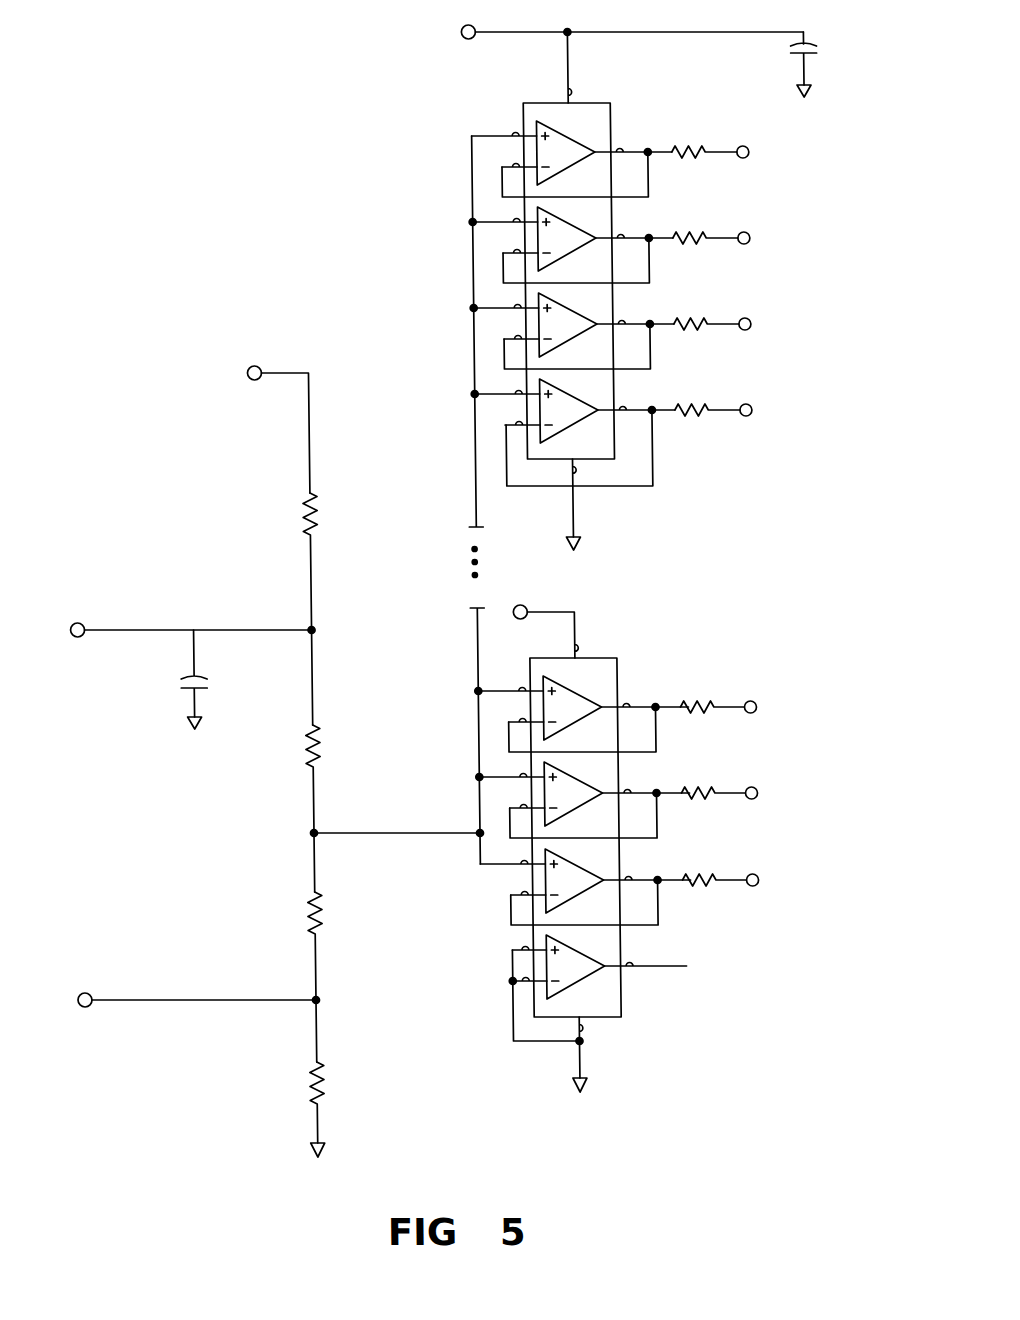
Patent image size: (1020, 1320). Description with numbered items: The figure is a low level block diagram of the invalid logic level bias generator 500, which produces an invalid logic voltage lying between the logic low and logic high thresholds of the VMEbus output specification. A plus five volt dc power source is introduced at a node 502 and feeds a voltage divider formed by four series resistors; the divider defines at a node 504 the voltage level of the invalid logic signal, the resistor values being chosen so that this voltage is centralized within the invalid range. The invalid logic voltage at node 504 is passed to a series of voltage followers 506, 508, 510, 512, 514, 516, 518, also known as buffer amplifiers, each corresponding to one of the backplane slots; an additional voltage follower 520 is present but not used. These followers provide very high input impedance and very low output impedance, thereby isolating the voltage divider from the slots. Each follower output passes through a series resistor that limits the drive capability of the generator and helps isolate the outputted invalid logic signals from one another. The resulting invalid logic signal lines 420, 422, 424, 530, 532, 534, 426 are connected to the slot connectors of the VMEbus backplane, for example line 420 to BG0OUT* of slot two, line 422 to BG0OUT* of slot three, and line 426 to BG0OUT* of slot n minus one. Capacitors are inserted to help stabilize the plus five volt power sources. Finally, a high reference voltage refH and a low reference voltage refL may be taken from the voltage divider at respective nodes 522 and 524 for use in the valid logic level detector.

The reference voltage generator circuit 500 is at (255, 206).
The node 502 is at (247, 379).
The node 504 is at (302, 837).
The voltage follower 506 is at (532, 153).
The voltage follower 508 is at (532, 239).
The voltage follower 510 is at (532, 325).
The voltage follower 512 is at (532, 411).
The voltage follower 514 is at (532, 708).
The voltage follower 516 is at (532, 794).
The voltage follower 518 is at (532, 881).
The voltage follower 520 is at (532, 967).
The invalid logic signal line 420 is at (725, 158).
The invalid logic signal line 422 is at (726, 245).
The invalid logic signal line 424 is at (728, 332).
The invalid logic signal line 426 is at (730, 886).
The invalid logic signal line 530 is at (727, 418).
The invalid logic signal line 532 is at (726, 700).
The invalid logic signal line 534 is at (728, 790).
The node 522 is at (71, 637).
The node 524 is at (74, 1007).